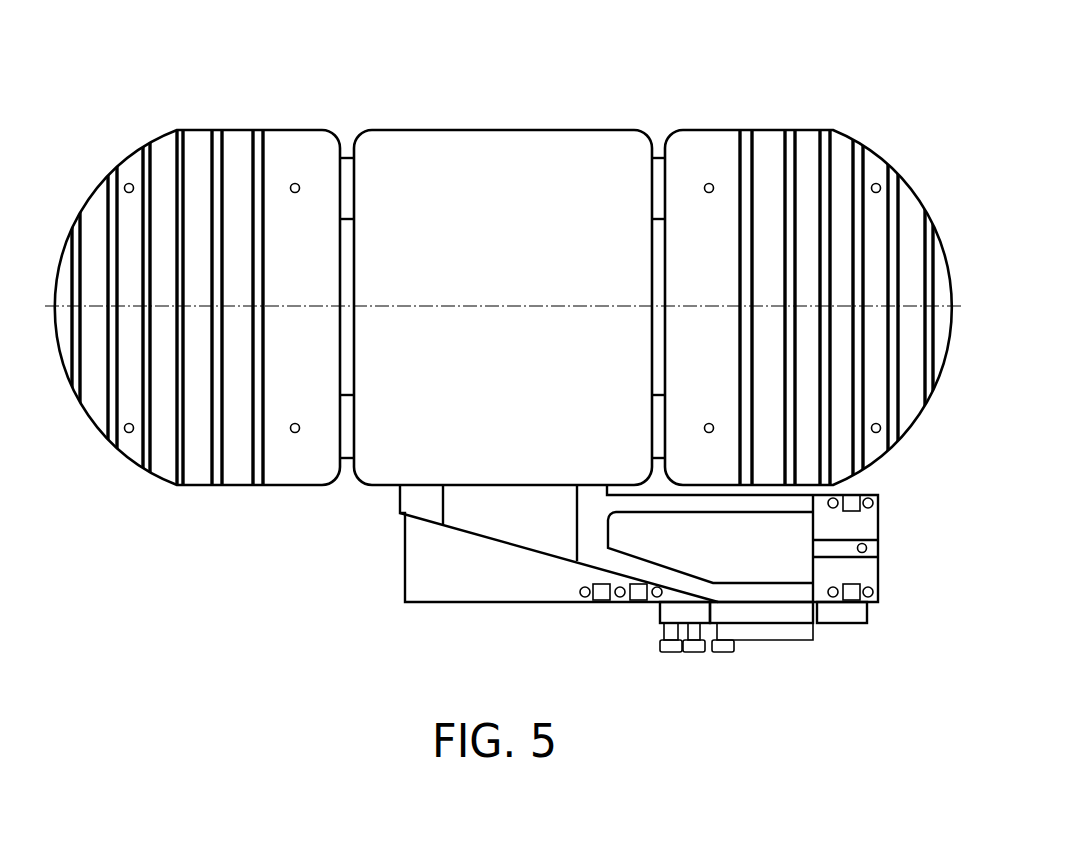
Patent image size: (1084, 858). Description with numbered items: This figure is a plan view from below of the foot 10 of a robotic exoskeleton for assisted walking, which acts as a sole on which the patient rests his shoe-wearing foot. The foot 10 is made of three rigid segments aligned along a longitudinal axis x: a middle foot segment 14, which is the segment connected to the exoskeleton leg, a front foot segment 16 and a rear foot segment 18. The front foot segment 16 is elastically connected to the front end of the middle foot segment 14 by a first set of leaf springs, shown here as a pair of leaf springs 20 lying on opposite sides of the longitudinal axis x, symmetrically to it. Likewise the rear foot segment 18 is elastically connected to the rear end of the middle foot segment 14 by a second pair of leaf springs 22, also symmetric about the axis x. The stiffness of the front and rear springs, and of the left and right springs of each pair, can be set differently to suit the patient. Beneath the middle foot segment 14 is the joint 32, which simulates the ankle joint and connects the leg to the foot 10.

The foot 10 is at (262, 97).
The middle foot segment 14 is at (450, 128).
The front foot segment 16 is at (198, 487).
The rear foot segment 18 is at (909, 225).
The leaf springs 20 is at (345, 142).
The leaf springs 22 is at (657, 142).
The joint 32 is at (820, 628).
The longitudinal axis x is at (518, 305).